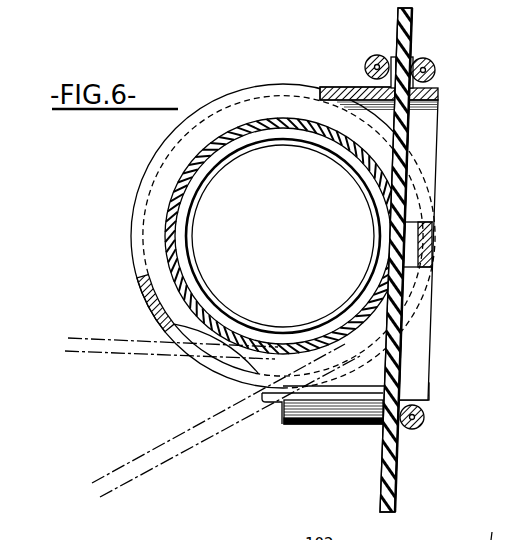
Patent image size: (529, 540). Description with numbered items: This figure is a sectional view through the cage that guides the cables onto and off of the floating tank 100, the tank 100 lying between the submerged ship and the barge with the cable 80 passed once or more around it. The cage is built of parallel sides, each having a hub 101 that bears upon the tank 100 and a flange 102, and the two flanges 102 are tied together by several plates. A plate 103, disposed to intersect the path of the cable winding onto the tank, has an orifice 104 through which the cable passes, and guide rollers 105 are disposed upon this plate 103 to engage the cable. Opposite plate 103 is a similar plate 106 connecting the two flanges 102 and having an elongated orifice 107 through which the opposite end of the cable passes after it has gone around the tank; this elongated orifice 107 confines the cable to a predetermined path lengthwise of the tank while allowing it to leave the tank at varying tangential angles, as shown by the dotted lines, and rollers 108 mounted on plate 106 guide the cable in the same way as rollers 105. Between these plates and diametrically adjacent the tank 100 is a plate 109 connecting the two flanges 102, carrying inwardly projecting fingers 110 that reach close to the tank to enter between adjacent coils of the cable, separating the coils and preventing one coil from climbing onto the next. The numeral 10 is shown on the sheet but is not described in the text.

The measuring tape 10 is at (457, 22).
The cable 80 is at (398, 478).
The tank 100 is at (492, 528).
The hub 101 is at (154, 10).
The flange 102 is at (235, 98).
The plate 103 is at (346, 85).
The orifice 104 is at (422, 104).
The guide rollers 105 is at (436, 69).
The plate 106 is at (140, 300).
The elongated orifice 107 is at (227, 373).
The rollers 108 is at (336, 427).
The plate 109 is at (432, 223).
The inwardly projecting fingers 110 is at (439, 237).